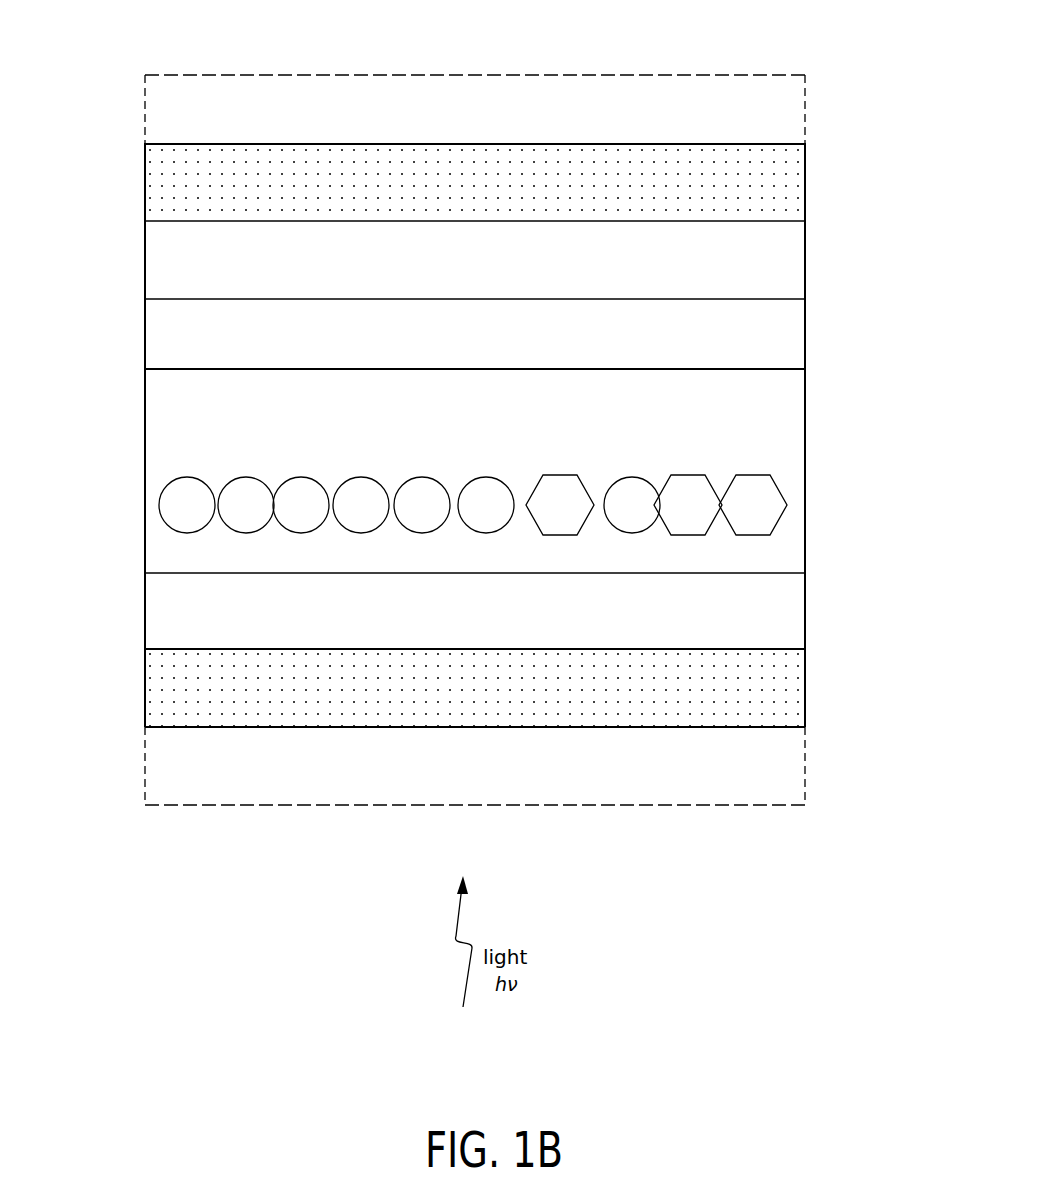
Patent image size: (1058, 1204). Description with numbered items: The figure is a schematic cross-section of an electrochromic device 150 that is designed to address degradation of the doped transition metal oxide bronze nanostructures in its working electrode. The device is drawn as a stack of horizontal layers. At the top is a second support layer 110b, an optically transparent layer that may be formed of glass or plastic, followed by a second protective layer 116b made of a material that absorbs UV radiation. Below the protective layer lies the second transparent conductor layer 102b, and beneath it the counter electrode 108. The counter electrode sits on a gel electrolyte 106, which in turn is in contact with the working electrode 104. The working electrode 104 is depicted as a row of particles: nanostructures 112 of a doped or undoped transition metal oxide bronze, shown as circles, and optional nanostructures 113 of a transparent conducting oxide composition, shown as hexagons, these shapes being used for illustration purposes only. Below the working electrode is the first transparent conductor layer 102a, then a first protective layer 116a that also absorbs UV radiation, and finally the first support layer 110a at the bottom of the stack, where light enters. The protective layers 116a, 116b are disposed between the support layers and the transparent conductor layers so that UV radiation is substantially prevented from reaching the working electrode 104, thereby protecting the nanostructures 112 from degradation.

The electrochromic device 150 is at (882, 106).
The second support layer 110b is at (145, 120).
The second protective layer 116b is at (145, 185).
The second transparent conductor layer 102b is at (145, 255).
The counter electrode 108 is at (145, 312).
The gel electrolyte 106 is at (805, 410).
The working electrode 104 is at (812, 463).
The nanostructures 112 is at (227, 487).
The nanostructures 113 is at (771, 538).
The first transparent conductor layer 102a is at (145, 612).
The first protective layer 116a is at (145, 690).
The first support layer 110a is at (145, 775).